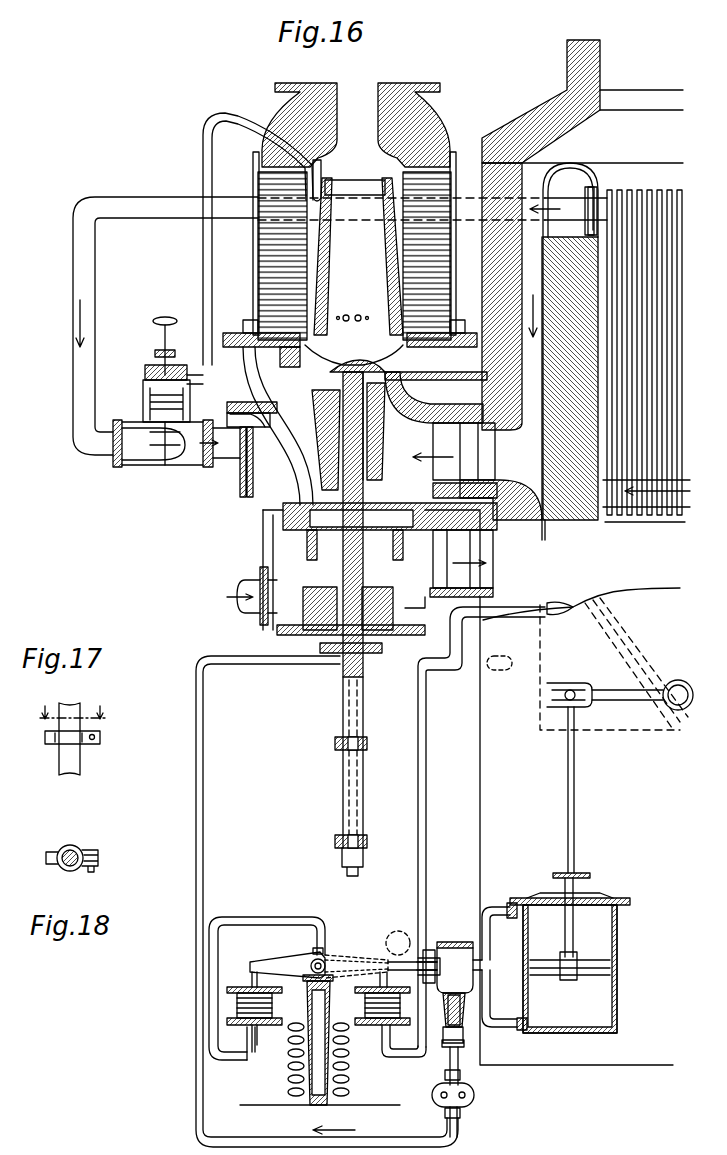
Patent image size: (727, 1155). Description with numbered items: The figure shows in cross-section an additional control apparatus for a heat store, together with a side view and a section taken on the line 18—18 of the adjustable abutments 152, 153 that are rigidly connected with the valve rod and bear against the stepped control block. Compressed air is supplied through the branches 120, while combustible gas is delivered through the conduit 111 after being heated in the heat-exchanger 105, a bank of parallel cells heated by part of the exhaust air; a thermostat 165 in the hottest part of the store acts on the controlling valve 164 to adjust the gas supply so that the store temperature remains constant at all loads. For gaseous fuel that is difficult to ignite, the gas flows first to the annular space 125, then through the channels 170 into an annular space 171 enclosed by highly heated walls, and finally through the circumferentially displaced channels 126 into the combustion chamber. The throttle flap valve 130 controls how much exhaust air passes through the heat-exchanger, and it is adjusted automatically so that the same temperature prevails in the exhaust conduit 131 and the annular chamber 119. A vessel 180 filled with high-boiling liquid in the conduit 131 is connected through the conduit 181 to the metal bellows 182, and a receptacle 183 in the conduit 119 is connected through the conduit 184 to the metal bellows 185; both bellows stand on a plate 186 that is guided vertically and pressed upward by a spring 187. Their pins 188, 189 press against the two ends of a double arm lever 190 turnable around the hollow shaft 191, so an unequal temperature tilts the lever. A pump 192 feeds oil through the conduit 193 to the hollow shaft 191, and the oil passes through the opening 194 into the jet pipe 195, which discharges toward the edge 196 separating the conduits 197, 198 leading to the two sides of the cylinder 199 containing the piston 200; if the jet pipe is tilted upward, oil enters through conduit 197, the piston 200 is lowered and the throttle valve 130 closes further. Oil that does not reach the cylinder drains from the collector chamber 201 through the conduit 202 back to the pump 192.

In FIG. 16, the heat-exchanger 105 is at (630, 205).
In FIG. 16, the conduit 111 is at (97, 303).
In FIG. 16, the annular chamber 119 is at (490, 741).
In FIG. 16, the branches 120 is at (240, 578).
In FIG. 16, the annular space 125 is at (290, 347).
In FIG. 16, the channels 126 is at (343, 315).
In FIG. 16, the throttle flap valve 130 is at (652, 652).
In FIG. 16, the exhaust air conduit 131 is at (565, 687).
In FIG. 16, the abutment 152 is at (364, 840).
In FIG. 16, the abutment 153 is at (340, 742).
In FIG. 17, the abutment 153 is at (50, 740).
In FIG. 18, the abutment 153 is at (52, 852).
In FIG. 16, the controlling valve 164 is at (148, 400).
In FIG. 16, the thermostat 165 is at (316, 190).
In FIG. 16, the channels 170 is at (387, 343).
In FIG. 16, the annular space 171 is at (330, 290).
In FIG. 16, the vessel 180 is at (565, 600).
In FIG. 16, the conduit 181 is at (427, 805).
In FIG. 16, the metal bellows 182 is at (383, 1030).
In FIG. 16, the receptacle 183 is at (500, 671).
In FIG. 16, the conduit 184 is at (196, 972).
In FIG. 16, the metal bellows 185 is at (237, 1005).
In FIG. 16, the plate 186 is at (283, 1026).
In FIG. 16, the spring 187 is at (292, 1087).
In FIG. 16, the pin 188 is at (380, 966).
In FIG. 16, the pin 189 is at (250, 966).
In FIG. 16, the double arm lever 190 is at (292, 958).
In FIG. 16, the hollow shaft 191 is at (322, 958).
In FIG. 16, the pump 192 is at (476, 1097).
In FIG. 16, the conduit 193 is at (460, 1128).
In FIG. 16, the opening 194 is at (400, 943).
In FIG. 16, the jet pipe 195 is at (414, 961).
In FIG. 16, the edge 196 is at (453, 945).
In FIG. 16, the conduit 197 is at (492, 905).
In FIG. 16, the conduit 198 is at (503, 1027).
In FIG. 16, the cylinder 199 is at (618, 935).
In FIG. 16, the piston 200 is at (612, 965).
In FIG. 16, the collector chamber 201 is at (456, 1012).
In FIG. 16, the conduit 202 is at (448, 1066).
In FIG. 17, the section line 18 is at (73, 705).